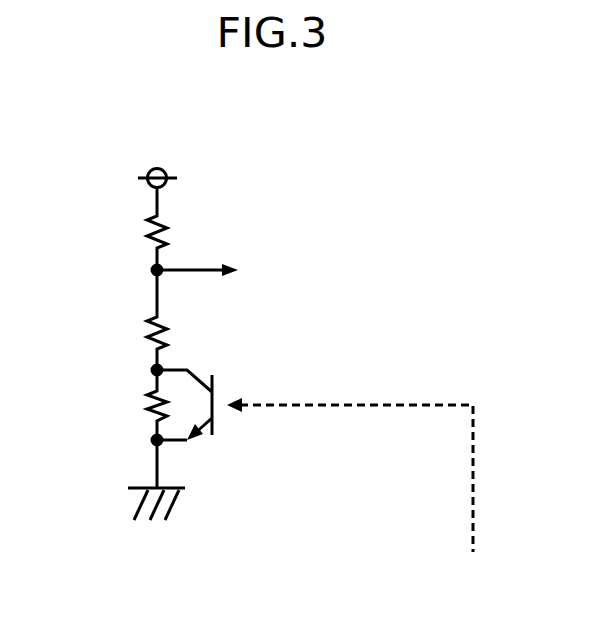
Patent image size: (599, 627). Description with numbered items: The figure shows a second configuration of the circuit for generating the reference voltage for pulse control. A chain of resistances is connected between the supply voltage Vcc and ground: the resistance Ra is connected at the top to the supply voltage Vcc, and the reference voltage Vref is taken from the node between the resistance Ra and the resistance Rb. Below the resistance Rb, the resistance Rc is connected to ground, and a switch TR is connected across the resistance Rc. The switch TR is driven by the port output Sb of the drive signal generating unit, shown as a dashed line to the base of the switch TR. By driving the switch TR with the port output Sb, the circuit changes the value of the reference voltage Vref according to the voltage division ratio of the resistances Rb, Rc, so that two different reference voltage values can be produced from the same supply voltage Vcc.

The resistance Ra is at (150, 228).
The resistance Rb is at (150, 328).
The resistance Rc is at (150, 403).
The switch TR is at (216, 424).
The supply voltage Vcc is at (157, 165).
The reference voltage Vref is at (214, 271).
The port output Sb is at (356, 490).